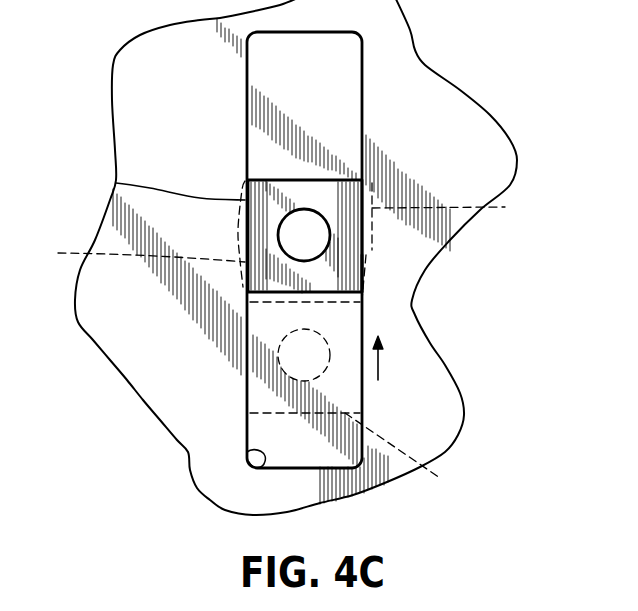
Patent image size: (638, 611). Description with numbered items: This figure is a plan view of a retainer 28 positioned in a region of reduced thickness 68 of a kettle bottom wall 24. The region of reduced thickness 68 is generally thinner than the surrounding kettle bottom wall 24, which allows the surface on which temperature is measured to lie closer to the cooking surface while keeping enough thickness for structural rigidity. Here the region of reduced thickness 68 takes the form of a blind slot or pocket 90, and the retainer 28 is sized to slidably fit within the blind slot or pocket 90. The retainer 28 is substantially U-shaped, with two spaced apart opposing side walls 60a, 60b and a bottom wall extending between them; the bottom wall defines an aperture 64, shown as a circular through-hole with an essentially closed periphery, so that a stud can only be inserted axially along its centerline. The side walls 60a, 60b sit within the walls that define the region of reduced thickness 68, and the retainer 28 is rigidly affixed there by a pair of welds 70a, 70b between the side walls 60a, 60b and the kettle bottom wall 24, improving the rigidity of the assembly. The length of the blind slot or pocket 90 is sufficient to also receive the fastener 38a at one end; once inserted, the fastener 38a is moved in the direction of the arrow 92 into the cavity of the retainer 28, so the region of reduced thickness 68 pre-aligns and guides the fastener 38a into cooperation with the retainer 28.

The kettle bottom wall 24 is at (210, 155).
The retainer 28 is at (368, 284).
The fastener 38a is at (414, 459).
The side wall 60a is at (362, 262).
The side wall 60b is at (116, 183).
The aperture 64 is at (330, 233).
The region of reduced thickness 68 is at (324, 78).
The weld 70a is at (132, 253).
The weld 70b is at (461, 208).
The blind slot or pocket 90 is at (262, 466).
The arrow 92 is at (378, 365).